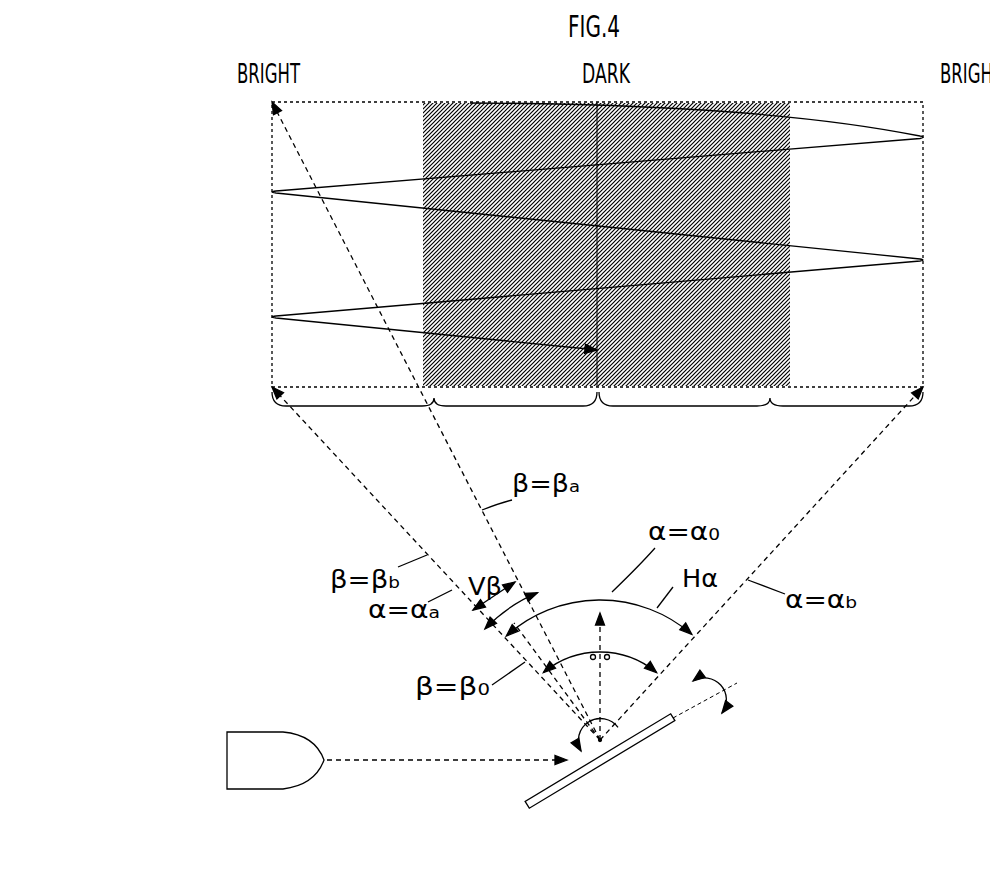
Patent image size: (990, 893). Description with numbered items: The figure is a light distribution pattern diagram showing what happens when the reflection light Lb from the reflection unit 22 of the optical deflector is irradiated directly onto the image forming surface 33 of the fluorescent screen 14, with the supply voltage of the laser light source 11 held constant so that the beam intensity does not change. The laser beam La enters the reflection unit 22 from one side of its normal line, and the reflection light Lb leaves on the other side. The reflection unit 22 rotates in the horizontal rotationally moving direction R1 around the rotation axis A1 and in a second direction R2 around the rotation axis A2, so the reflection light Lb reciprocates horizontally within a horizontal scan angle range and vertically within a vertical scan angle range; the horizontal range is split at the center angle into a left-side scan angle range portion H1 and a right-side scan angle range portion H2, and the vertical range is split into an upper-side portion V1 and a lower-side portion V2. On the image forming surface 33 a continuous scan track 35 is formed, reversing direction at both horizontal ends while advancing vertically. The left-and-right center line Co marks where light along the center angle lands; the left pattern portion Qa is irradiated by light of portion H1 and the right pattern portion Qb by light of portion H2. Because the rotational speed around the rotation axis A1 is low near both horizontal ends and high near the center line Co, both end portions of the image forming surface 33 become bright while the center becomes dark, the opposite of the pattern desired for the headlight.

The laser light source 11 is at (262, 732).
The fluorescent screen 14 is at (232, 228).
The reflection unit 22 is at (660, 732).
The image forming surface 33 is at (927, 192).
The scan track 35 is at (405, 178).
The left-and-right center line Co is at (643, 101).
The light distribution pattern portion Qa is at (434, 419).
The light distribution pattern portion Qb is at (761, 419).
The reflection light Lb is at (400, 510).
The laser beam La is at (428, 768).
The left-side scan angle range portion H1 is at (599, 636).
The right-side scan angle range portion H2 is at (642, 652).
The upper-side scan angle range portion V1 is at (530, 600).
The lower-side scan angle range portion V2 is at (500, 618).
The rotation axis A1 is at (600, 768).
The rotation axis A2 is at (727, 688).
The horizontal rotationally moving direction R1 is at (572, 728).
The rotationally moving direction R2 is at (745, 718).